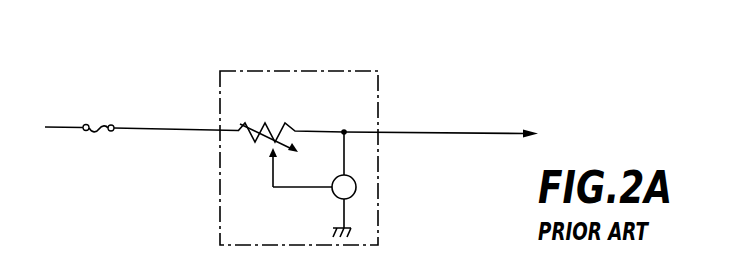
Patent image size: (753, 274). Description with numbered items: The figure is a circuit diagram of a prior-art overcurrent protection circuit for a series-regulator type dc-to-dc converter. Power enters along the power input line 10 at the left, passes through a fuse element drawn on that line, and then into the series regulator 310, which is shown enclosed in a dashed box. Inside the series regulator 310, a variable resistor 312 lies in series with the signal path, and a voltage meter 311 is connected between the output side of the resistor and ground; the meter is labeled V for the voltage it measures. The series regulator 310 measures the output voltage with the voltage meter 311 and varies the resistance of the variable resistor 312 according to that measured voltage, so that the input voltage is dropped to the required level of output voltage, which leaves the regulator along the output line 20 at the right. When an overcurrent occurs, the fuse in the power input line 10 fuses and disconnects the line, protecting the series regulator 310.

The power input line 10 is at (66, 130).
The output signal line 20 is at (485, 132).
The series regulator 310 is at (270, 71).
The voltage meter 311 is at (331, 183).
The variable resistor 312 is at (283, 131).
The control voltage V is at (344, 189).